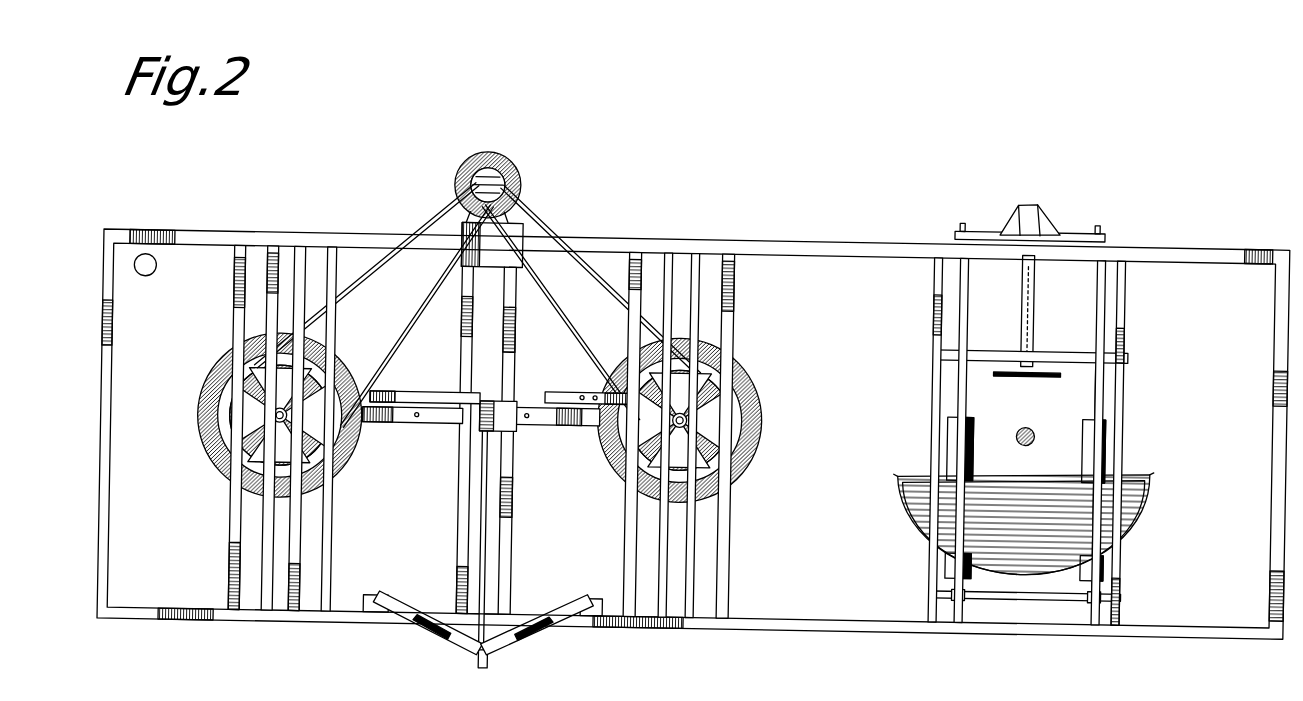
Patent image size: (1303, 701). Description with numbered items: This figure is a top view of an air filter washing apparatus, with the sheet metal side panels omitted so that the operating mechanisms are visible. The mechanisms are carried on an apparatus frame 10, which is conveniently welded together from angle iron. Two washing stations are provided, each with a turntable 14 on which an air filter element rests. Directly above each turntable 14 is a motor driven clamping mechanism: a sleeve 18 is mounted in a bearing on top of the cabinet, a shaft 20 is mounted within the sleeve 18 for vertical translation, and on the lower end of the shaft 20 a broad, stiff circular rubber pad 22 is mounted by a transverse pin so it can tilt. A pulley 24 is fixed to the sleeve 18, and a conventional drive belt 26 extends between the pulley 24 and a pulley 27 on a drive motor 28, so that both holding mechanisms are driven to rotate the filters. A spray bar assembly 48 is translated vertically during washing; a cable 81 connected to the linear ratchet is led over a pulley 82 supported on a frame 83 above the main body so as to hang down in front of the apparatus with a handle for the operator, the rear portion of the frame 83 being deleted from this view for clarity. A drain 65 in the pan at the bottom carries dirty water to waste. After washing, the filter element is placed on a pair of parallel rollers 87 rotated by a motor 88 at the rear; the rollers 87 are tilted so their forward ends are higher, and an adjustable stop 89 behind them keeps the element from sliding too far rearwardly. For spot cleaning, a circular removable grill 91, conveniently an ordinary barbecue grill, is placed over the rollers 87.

The apparatus frame 10 is at (1107, 622).
The turntable 14 is at (347, 356).
The sleeve 18 is at (303, 414).
The shaft 20 is at (309, 436).
The circular rubber pad 22 is at (238, 413).
The pulley 24 is at (246, 395).
The drive belt 26 is at (445, 199).
The pulley 27 is at (504, 171).
The drive motor 28 is at (514, 158).
The spray bar assembly 48 is at (422, 424).
The drain 65 is at (157, 270).
The cable 81 is at (492, 513).
The pulley 82 is at (495, 662).
The frame 83 is at (578, 384).
The parallel rollers 87 is at (952, 435).
The motor 88 is at (1040, 188).
The adjustable stop 89 is at (1036, 283).
The circular removable grill 91 is at (1145, 481).